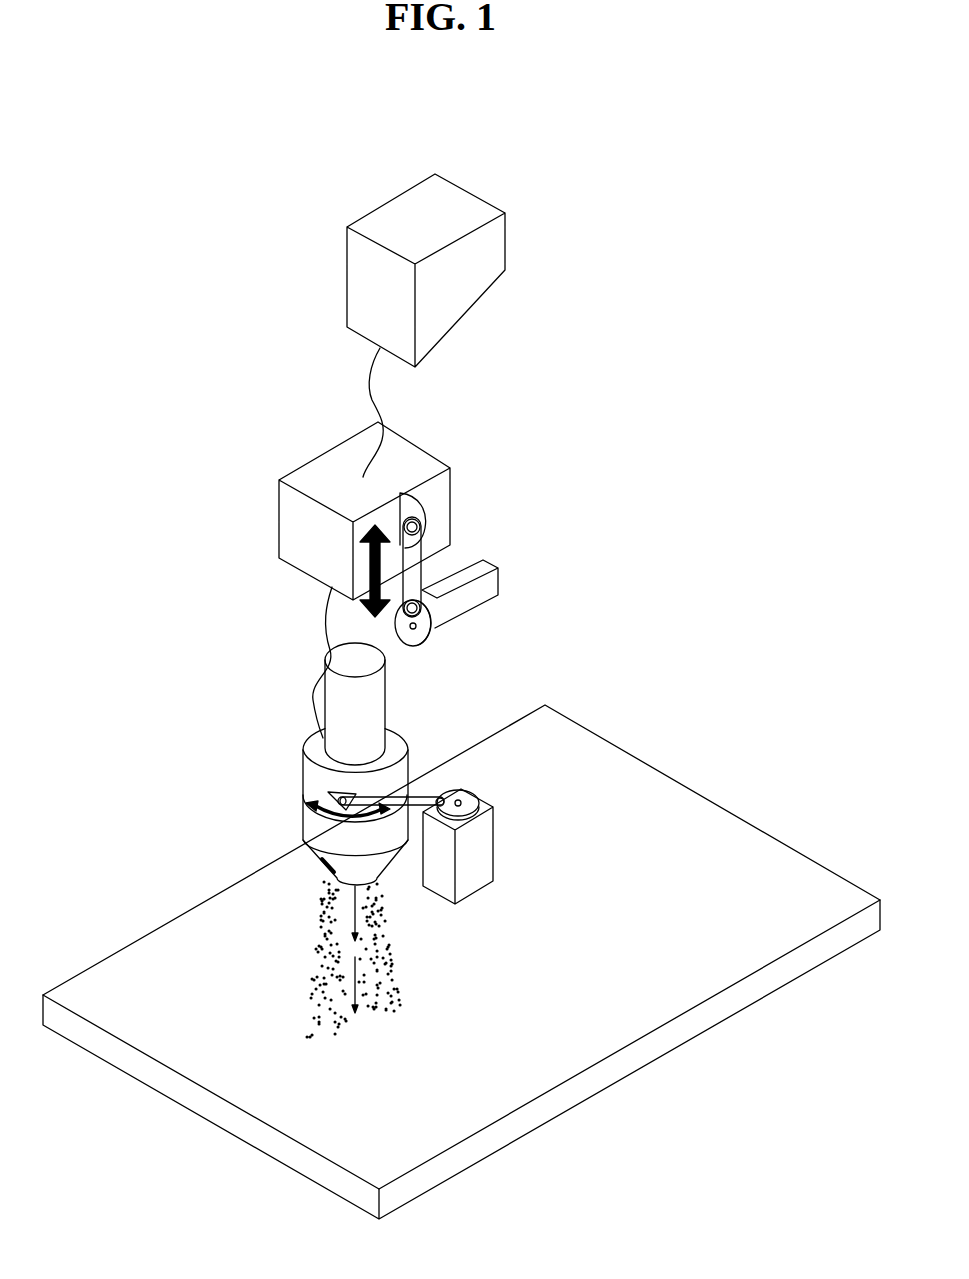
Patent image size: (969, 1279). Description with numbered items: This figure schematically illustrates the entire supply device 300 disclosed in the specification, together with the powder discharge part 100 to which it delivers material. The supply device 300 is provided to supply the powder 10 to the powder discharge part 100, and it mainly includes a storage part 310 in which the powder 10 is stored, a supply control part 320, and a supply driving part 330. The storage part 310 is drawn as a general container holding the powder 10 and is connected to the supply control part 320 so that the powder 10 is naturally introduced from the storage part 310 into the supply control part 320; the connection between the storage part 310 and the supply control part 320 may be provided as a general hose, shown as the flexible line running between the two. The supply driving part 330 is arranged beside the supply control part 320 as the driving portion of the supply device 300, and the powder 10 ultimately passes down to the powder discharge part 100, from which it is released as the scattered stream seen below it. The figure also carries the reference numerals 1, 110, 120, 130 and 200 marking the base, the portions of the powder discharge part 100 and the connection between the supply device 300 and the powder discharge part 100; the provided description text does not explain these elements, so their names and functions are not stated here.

The base plate 1 is at (123, 972).
The powder 10 is at (322, 928).
The powder discharge part 100 is at (218, 760).
The hopper 110 is at (322, 778).
The stirring link drive 120 is at (383, 793).
The vibrating plate 130 is at (313, 835).
The connecting cylinder 200 is at (377, 690).
The supply device 300 is at (520, 374).
The storage part 310 is at (430, 330).
The supply control part 320 is at (444, 491).
The supply driving part 330 is at (434, 569).